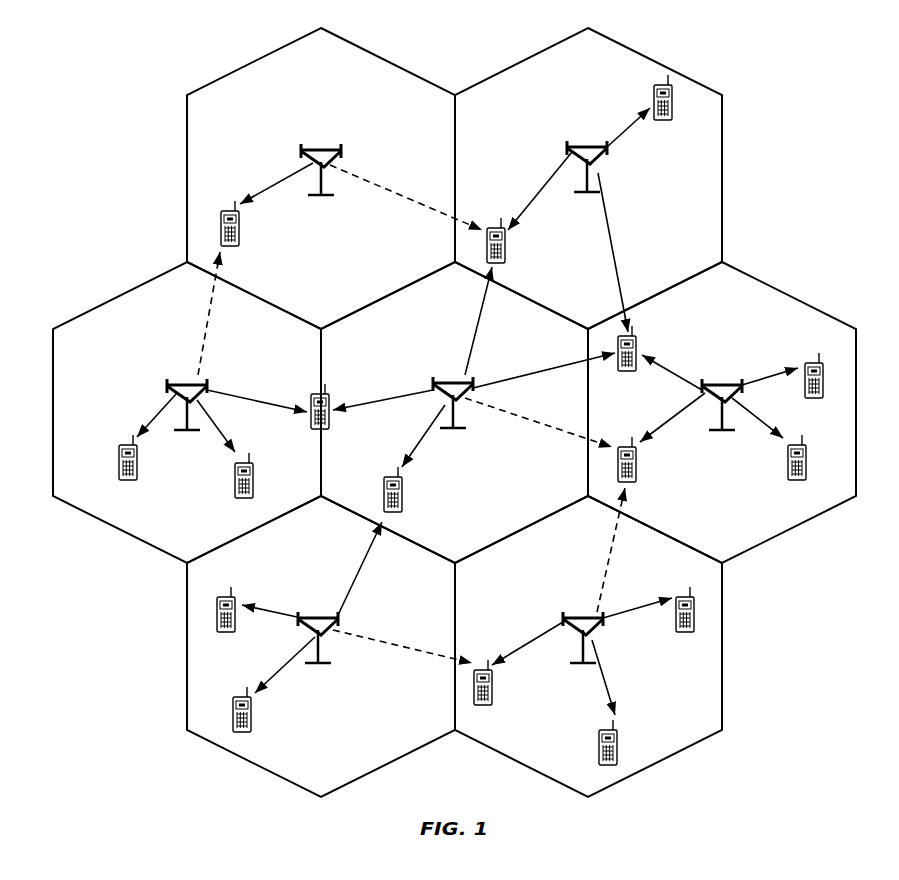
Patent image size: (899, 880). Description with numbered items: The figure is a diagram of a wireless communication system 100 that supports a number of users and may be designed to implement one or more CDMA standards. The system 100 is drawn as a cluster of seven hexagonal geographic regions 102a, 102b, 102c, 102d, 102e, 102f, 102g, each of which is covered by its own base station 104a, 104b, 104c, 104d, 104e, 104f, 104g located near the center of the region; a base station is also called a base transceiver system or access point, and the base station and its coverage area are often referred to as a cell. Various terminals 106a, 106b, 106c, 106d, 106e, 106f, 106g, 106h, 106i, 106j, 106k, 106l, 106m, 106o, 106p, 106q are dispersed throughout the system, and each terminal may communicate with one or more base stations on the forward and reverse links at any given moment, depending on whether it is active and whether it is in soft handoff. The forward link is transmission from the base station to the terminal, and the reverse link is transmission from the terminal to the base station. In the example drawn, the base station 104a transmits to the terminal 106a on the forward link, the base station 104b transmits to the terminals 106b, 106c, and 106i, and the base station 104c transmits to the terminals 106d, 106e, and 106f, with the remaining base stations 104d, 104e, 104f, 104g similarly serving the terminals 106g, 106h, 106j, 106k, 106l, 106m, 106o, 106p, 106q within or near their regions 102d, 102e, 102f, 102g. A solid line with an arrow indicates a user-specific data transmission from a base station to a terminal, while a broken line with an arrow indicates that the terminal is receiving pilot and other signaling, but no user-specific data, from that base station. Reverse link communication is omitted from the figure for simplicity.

The wireless communication system 100 is at (802, 61).
The geographic region 102a is at (255, 60).
The geographic region 102b is at (667, 47).
The geographic region 102c is at (120, 293).
The geographic region 102d is at (476, 302).
The geographic region 102e is at (792, 293).
The geographic region 102f is at (187, 655).
The geographic region 102g is at (722, 657).
The base station 104a is at (322, 148).
The base station 104b is at (585, 145).
The base station 104c is at (183, 383).
The base station 104d is at (450, 381).
The base station 104e is at (725, 383).
The base station 104f is at (312, 616).
The base station 104g is at (578, 616).
The terminal 106a is at (224, 212).
The terminal 106b is at (492, 228).
The terminal 106c is at (654, 92).
The terminal 106d is at (119, 462).
The terminal 106e is at (243, 462).
The terminal 106f is at (311, 400).
The terminal 106g is at (388, 477).
The terminal 106h is at (621, 447).
The terminal 106i is at (640, 345).
The terminal 106j is at (812, 362).
The terminal 106k is at (795, 445).
The terminal 106l is at (219, 596).
The terminal 106m is at (236, 696).
The terminal 106o is at (493, 690).
The terminal 106p is at (599, 746).
The terminal 106q is at (700, 583).